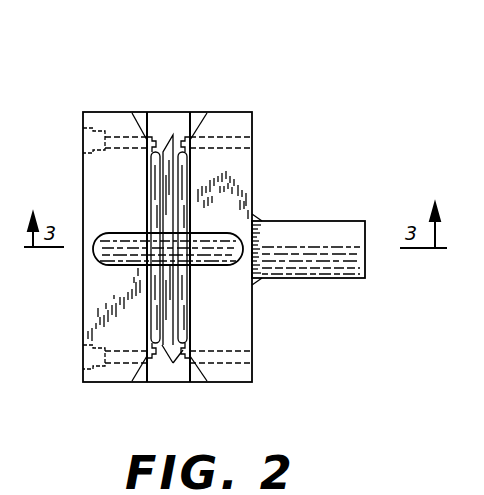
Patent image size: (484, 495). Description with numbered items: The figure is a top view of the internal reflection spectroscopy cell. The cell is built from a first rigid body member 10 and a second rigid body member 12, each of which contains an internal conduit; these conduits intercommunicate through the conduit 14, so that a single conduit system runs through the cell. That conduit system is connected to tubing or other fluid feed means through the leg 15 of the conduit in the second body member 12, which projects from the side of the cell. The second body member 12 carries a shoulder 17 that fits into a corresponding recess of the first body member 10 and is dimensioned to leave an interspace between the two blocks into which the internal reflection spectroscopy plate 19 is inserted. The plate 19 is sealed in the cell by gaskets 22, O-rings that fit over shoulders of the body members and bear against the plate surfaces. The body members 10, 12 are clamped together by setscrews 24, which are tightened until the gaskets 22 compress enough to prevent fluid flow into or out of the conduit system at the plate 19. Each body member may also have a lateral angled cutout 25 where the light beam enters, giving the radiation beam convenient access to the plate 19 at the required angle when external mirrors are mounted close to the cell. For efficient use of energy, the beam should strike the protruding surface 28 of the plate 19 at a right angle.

The first rigid body member 10 is at (83, 173).
The second rigid body member 12 is at (254, 170).
The conduit 14 is at (100, 250).
The leg 15 is at (312, 221).
The shoulder 17 is at (182, 372).
The internal reflection spectroscopy plate 19 is at (170, 366).
The gaskets 22 is at (151, 157).
The setscrews 24 is at (121, 134).
The lateral angled cutout 25 is at (199, 116).
The surface 28 is at (170, 150).